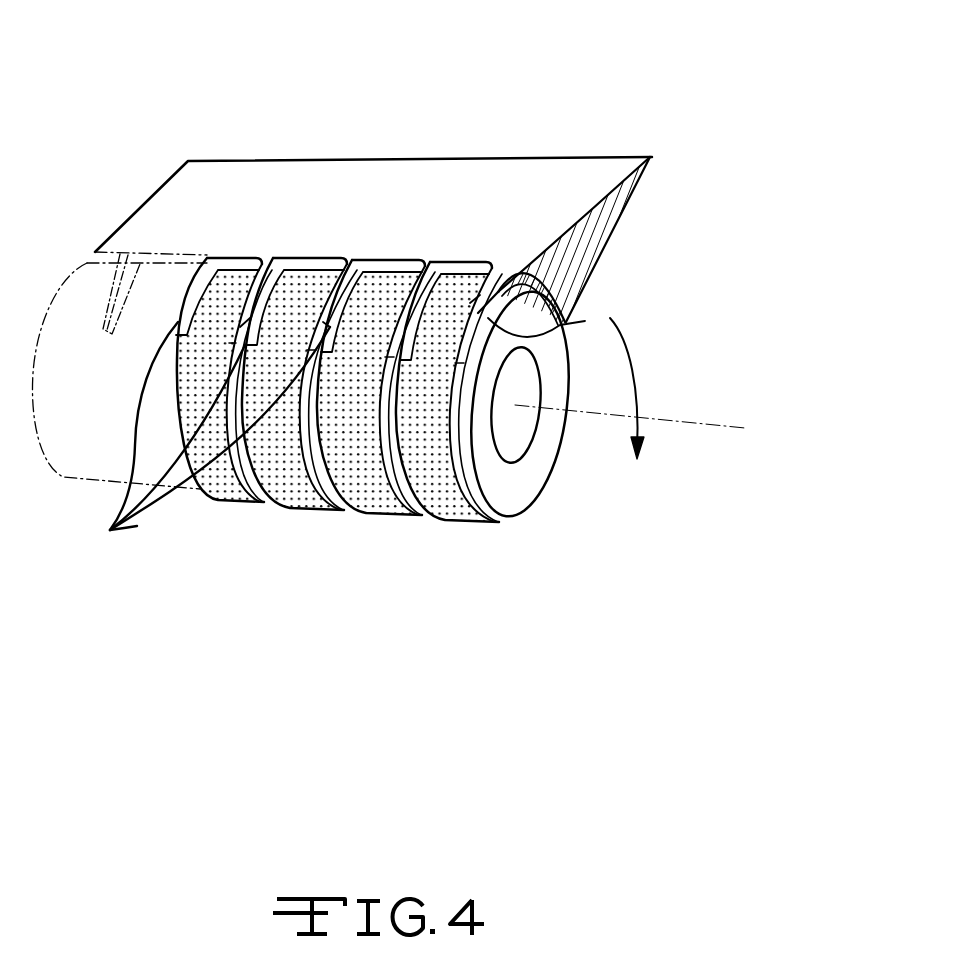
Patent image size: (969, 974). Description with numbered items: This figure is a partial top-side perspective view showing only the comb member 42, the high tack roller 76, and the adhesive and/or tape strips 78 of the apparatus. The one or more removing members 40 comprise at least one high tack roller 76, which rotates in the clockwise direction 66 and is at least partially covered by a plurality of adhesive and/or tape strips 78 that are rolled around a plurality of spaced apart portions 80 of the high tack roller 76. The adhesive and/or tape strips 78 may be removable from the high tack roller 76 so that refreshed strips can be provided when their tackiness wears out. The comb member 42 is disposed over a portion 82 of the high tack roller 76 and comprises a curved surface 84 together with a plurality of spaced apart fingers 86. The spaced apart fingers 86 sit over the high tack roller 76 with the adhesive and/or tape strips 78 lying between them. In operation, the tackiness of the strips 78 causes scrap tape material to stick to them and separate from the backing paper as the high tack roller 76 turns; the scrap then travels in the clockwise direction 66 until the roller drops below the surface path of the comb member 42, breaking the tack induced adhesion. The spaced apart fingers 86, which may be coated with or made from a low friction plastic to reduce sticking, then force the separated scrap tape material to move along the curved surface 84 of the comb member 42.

The removing members 40 is at (527, 484).
The comb member 42 is at (505, 173).
The clockwise direction 66 is at (635, 377).
The high tack roller 76 is at (547, 440).
The adhesive and/or tape strips 78 is at (223, 492).
The spaced apart portions 80 is at (339, 454).
The portion of the high tack roller 82 is at (585, 321).
The curved surface 84 is at (131, 212).
The spaced apart fingers 86 is at (470, 307).